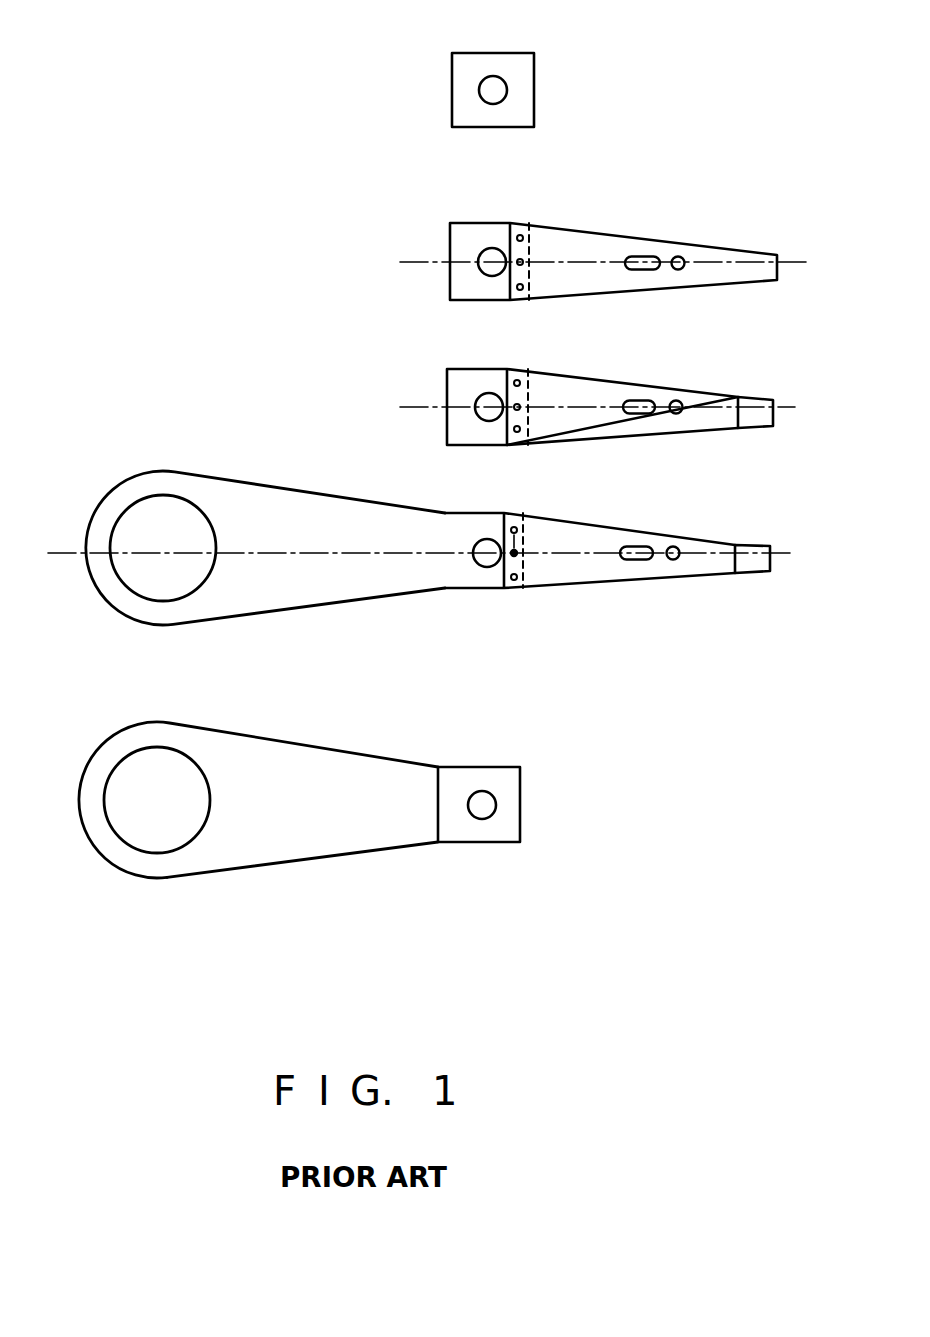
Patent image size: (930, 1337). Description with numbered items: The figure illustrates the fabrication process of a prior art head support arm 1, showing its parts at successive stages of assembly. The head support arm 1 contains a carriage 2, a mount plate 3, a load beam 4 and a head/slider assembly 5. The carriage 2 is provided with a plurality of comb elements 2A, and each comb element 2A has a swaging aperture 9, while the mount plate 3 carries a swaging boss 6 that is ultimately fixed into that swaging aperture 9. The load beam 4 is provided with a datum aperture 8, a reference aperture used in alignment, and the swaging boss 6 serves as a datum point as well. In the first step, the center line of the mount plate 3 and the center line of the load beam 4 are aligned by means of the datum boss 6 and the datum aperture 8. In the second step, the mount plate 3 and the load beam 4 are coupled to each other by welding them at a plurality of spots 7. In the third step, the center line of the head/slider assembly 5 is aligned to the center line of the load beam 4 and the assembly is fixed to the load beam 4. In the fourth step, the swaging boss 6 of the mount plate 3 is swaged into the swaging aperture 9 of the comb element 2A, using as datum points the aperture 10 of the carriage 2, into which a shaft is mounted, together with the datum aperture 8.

The head support arm 1 is at (266, 466).
The carriage 2 is at (323, 742).
The comb element 2A is at (385, 834).
The mount plate 3 is at (500, 54).
The load beam 4 is at (640, 237).
The head/slider assembly 5 is at (745, 545).
The swaging boss 6 is at (508, 88).
The spots 7 is at (524, 286).
The datum aperture 8 is at (683, 256).
The swaging aperture 9 is at (485, 791).
The aperture 10 is at (128, 841).